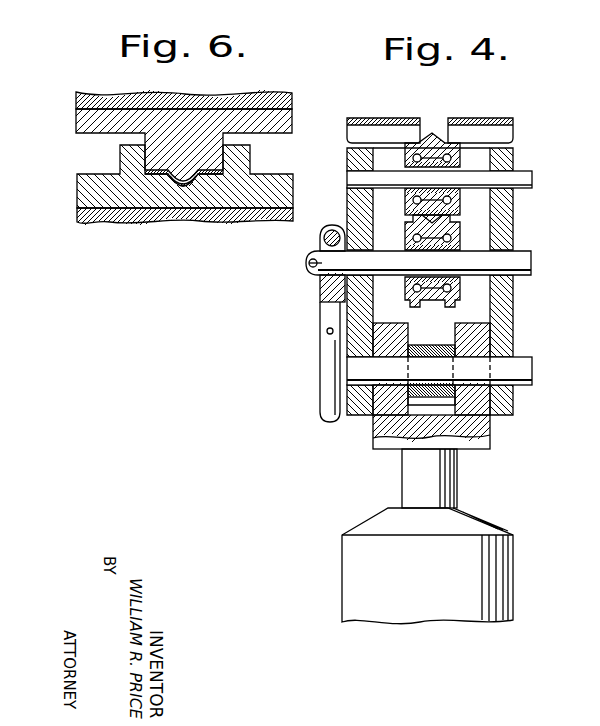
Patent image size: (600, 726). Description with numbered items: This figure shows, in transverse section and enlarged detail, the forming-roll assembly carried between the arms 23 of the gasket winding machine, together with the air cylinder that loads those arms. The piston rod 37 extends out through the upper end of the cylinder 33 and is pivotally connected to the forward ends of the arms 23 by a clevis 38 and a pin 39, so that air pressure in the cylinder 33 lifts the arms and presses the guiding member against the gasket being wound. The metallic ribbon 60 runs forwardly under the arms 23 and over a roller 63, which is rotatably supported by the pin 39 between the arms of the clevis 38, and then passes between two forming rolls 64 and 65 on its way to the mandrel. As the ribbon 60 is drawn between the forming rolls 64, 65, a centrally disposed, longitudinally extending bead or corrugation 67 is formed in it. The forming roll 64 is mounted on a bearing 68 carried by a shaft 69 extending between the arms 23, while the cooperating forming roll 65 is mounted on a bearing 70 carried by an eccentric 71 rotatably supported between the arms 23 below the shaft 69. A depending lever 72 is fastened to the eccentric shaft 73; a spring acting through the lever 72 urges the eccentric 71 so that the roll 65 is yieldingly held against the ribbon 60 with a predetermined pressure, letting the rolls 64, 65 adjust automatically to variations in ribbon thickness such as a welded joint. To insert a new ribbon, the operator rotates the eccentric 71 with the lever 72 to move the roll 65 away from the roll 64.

In FIG. 4, the arms 23 is at (505, 312).
In FIG. 4, the cylinder 33 is at (500, 601).
In FIG. 4, the piston rod 37 is at (448, 487).
In FIG. 4, the clevis 38 is at (480, 348).
In FIG. 4, the pin 39 is at (529, 377).
In FIG. 6, the metallic ribbon 60 is at (178, 184).
In FIG. 4, the metallic ribbon 60 is at (420, 430).
In FIG. 4, the roller 63 is at (490, 393).
In FIG. 6, the forming roll 64 is at (284, 111).
In FIG. 4, the forming roll 64 is at (420, 141).
In FIG. 6, the forming roll 65 is at (80, 190).
In FIG. 4, the forming roll 65 is at (448, 310).
In FIG. 6, the bead or corrugation 67 is at (192, 178).
In FIG. 6, the bearing 68 is at (213, 93).
In FIG. 4, the bearing 68 is at (460, 158).
In FIG. 4, the shaft 69 is at (480, 180).
In FIG. 6, the bearing 70 is at (105, 220).
In FIG. 4, the bearing 70 is at (458, 241).
In FIG. 4, the eccentric 71 is at (476, 263).
In FIG. 4, the depending lever 72 is at (321, 297).
In FIG. 4, the eccentric shaft 73 is at (306, 265).